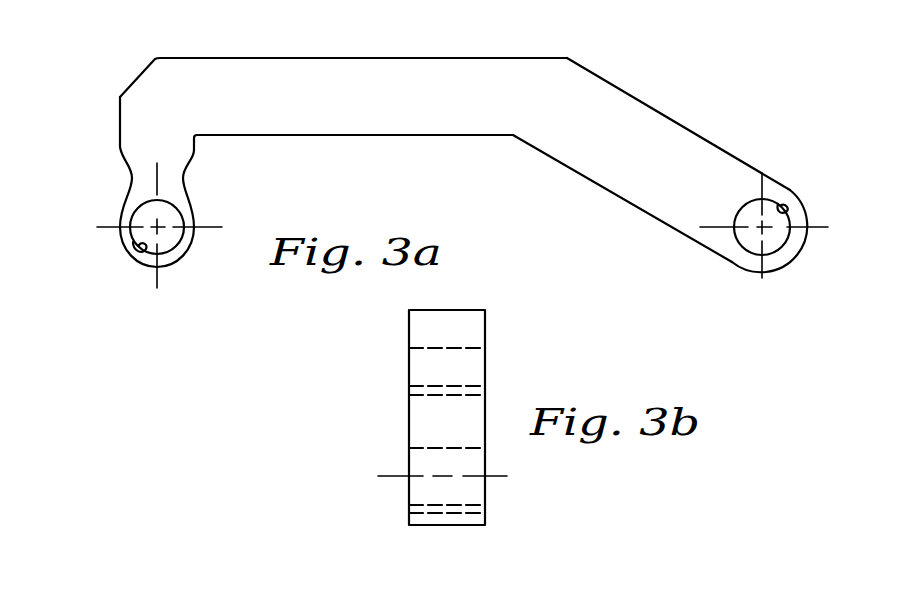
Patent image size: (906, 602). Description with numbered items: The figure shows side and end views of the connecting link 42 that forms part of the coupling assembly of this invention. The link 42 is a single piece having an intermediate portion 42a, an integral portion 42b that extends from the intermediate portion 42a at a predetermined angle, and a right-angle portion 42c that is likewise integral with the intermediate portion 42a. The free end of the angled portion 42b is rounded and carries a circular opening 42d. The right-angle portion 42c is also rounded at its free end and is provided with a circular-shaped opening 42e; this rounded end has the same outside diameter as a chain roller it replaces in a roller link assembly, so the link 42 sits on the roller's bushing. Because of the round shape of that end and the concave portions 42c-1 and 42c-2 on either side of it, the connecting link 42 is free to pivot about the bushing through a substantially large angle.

The connecting link 42 is at (323, 23).
The intermediate portion 42a is at (373, 68).
The integral portion 42b is at (672, 137).
The right-angle portion 42c is at (130, 148).
The concave portion 42c-1 is at (132, 180).
The concave portion 42c-2 is at (183, 179).
The circular opening 42d is at (783, 205).
The circular-shaped opening 42e is at (143, 246).